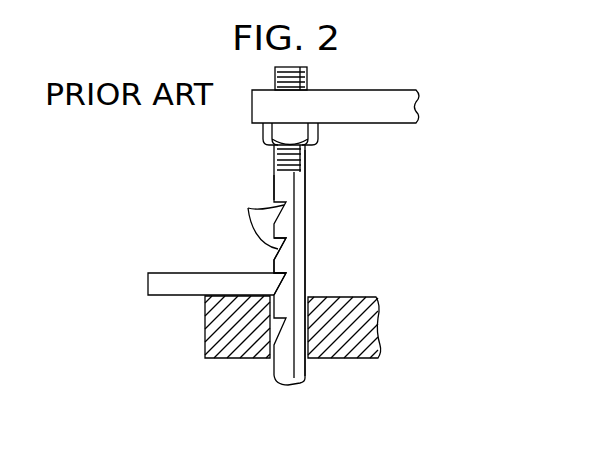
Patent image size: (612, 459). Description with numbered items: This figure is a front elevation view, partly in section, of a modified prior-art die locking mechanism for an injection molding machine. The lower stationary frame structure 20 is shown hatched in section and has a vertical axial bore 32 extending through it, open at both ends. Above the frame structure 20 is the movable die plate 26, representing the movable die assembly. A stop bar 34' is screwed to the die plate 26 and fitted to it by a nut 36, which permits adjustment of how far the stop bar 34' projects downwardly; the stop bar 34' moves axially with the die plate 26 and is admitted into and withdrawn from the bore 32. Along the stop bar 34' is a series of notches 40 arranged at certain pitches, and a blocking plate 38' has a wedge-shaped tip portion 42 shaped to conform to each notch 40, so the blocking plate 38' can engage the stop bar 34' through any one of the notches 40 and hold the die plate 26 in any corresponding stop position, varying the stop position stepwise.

The lower stationary frame structure 20 is at (372, 297).
The die plate 26 is at (385, 125).
The vertical axial bore 32 is at (273, 377).
The stop bar 34' is at (318, 263).
The nut 36 is at (263, 135).
The blocking plate 38' is at (217, 311).
The notches 40 is at (250, 219).
The wedge-shaped tip portion 42 is at (286, 294).